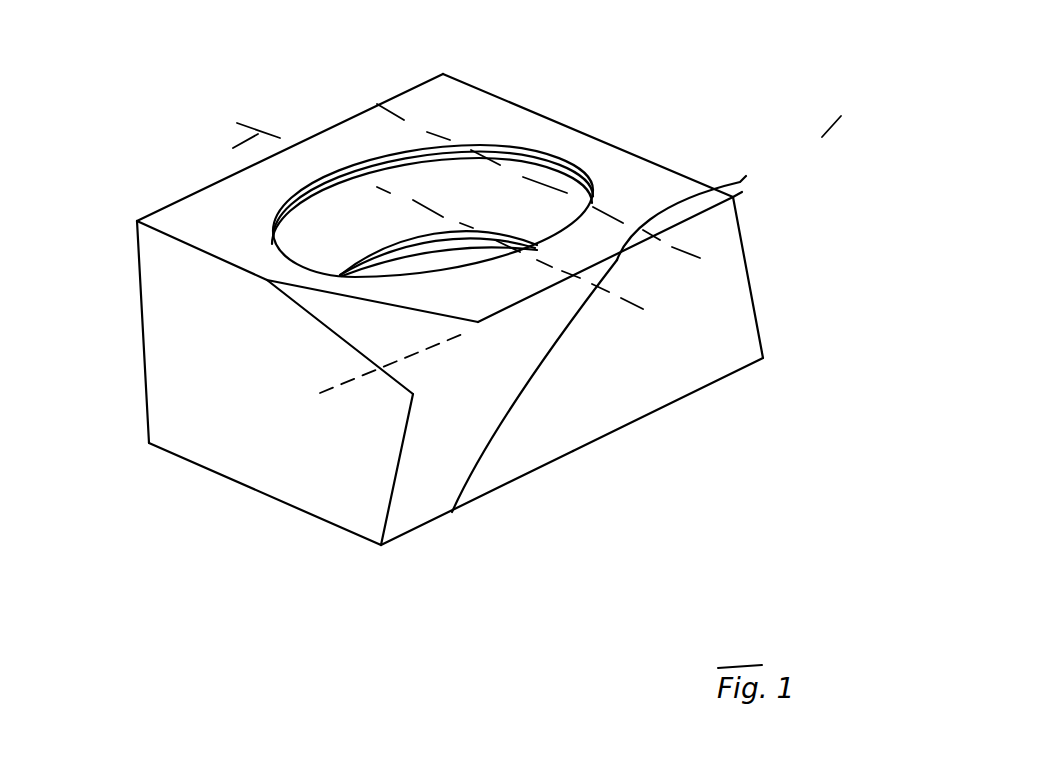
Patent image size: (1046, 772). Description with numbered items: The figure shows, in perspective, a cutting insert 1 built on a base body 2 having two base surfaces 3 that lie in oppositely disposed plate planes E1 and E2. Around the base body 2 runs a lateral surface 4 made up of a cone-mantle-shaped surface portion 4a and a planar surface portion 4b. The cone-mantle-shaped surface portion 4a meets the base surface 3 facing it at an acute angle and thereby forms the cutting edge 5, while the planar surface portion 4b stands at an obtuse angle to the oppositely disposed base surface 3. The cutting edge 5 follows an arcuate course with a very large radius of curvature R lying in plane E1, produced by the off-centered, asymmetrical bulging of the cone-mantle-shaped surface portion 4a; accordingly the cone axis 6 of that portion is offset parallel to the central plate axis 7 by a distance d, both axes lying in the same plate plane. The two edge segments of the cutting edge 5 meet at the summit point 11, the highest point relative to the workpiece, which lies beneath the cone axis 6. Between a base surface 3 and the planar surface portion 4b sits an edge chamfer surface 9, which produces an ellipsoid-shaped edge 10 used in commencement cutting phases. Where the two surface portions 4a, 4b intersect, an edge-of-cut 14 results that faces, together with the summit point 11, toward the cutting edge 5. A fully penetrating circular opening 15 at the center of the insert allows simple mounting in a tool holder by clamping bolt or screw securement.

The cutting insert 1 is at (697, 65).
The base body 2 is at (534, 110).
The base surface 3 is at (648, 185).
The lateral surface 4 is at (715, 355).
The cone-mantle-shaped surface portion 4a is at (422, 511).
The planar surface portion 4b is at (687, 303).
The cutting edge 5 is at (697, 212).
The cone axis 6 is at (327, 83).
The central plate axis 7 is at (256, 134).
The edge chamfer surface 9 is at (388, 343).
The edge 10 is at (470, 331).
The summit point 11 is at (733, 238).
The edge-of-cut 14 is at (496, 438).
The circular opening 15 is at (330, 246).
The distance d is at (363, 92).
The radius of curvature R is at (793, 163).